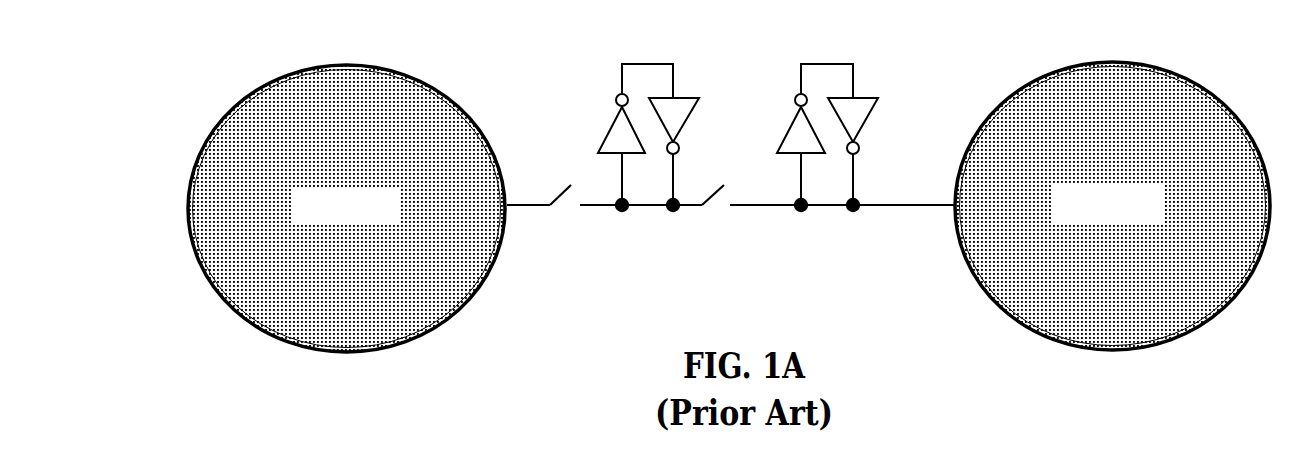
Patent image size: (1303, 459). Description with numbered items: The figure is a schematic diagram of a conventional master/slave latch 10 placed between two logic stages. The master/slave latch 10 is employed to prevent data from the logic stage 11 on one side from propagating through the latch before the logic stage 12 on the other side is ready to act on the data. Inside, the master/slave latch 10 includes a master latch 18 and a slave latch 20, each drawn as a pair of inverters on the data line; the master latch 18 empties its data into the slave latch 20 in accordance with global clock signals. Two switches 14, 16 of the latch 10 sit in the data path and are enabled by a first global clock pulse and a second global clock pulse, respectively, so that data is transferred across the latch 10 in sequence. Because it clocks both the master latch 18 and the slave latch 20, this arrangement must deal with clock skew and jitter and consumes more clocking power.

The master/slave latch 10 is at (867, 55).
The logic stage 11 is at (473, 297).
The logic stage 12 is at (965, 257).
The switch 14 is at (562, 175).
The switch 16 is at (740, 180).
The master latch 18 is at (603, 98).
The slave latch 20 is at (890, 92).